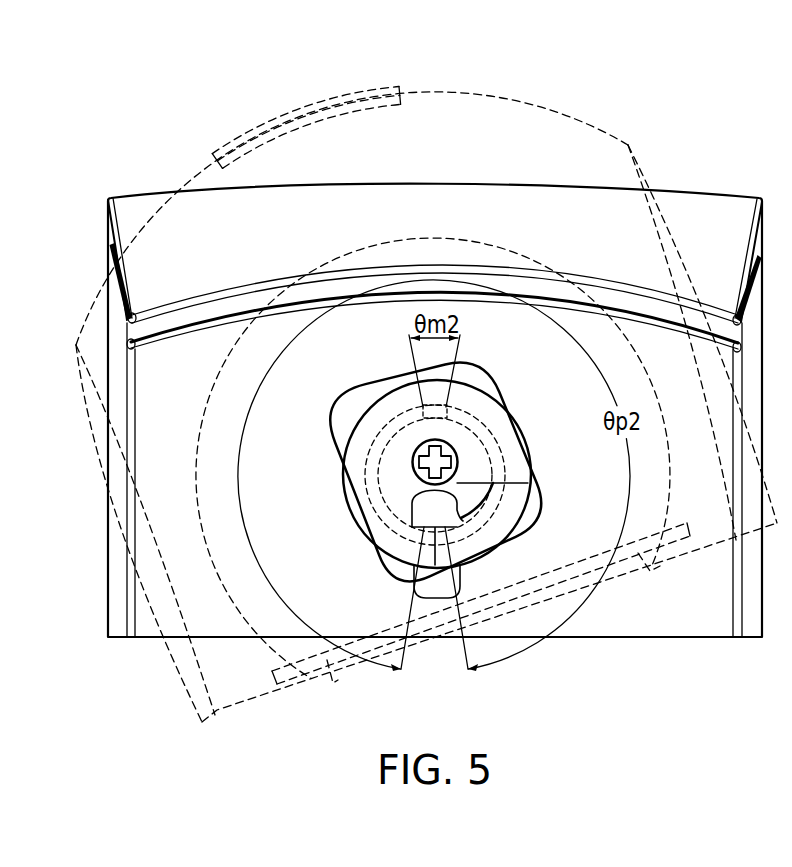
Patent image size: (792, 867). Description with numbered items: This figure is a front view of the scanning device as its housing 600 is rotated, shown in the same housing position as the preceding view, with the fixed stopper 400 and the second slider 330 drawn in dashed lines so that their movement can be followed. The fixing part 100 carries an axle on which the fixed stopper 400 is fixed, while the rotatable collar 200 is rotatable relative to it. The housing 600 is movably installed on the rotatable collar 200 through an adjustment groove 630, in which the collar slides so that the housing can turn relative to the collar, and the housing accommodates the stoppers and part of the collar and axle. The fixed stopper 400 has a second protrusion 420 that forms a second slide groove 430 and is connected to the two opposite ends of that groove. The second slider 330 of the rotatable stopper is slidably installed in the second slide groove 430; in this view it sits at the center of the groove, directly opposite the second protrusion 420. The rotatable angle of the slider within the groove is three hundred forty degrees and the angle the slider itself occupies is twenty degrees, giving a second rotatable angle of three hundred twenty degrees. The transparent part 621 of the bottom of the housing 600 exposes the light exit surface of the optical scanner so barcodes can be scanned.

The fixing part 100 is at (703, 194).
The rotatable collar 200 is at (483, 378).
The second slider 330 is at (442, 420).
The fixed stopper 400 is at (497, 427).
The second protrusion 420 is at (415, 533).
The second slide groove 430 is at (362, 495).
The housing 600 is at (541, 106).
The transparent part 621 is at (533, 608).
The adjustment groove 630 is at (302, 116).